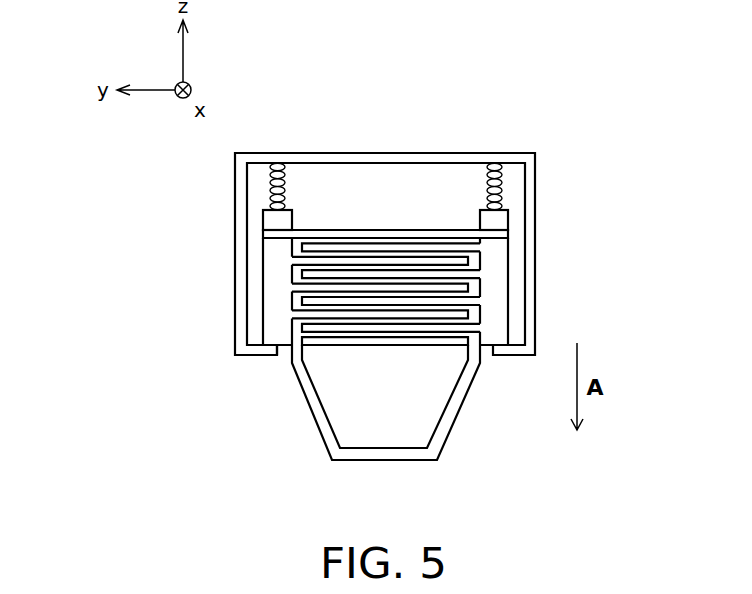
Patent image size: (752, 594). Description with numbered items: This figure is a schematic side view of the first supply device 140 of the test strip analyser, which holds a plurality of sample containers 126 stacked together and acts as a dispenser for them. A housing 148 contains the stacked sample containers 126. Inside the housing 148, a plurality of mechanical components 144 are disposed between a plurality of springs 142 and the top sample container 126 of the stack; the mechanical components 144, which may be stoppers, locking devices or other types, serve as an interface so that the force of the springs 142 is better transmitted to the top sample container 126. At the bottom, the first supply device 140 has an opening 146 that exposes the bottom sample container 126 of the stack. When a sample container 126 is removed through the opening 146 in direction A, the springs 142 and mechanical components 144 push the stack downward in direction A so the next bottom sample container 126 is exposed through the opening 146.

The first supply device 140 is at (325, 98).
The housing 148 is at (343, 160).
The mechanical components 144 is at (492, 222).
The springs 142 is at (503, 188).
The opening 146 is at (283, 346).
The sample containers 126 is at (378, 460).